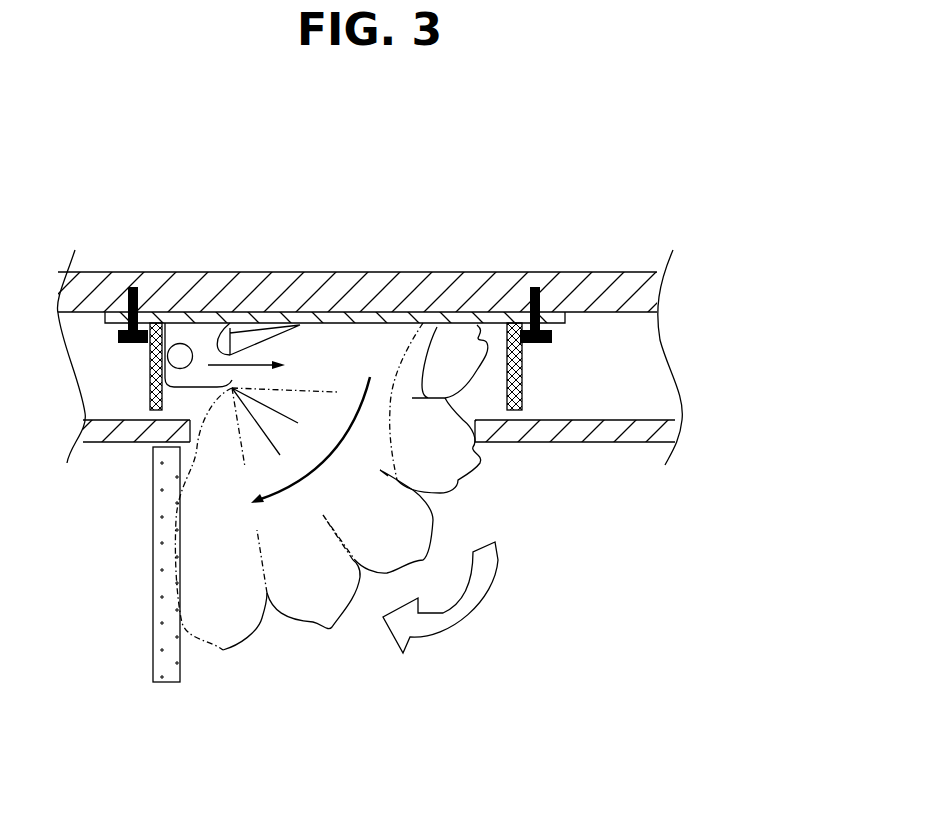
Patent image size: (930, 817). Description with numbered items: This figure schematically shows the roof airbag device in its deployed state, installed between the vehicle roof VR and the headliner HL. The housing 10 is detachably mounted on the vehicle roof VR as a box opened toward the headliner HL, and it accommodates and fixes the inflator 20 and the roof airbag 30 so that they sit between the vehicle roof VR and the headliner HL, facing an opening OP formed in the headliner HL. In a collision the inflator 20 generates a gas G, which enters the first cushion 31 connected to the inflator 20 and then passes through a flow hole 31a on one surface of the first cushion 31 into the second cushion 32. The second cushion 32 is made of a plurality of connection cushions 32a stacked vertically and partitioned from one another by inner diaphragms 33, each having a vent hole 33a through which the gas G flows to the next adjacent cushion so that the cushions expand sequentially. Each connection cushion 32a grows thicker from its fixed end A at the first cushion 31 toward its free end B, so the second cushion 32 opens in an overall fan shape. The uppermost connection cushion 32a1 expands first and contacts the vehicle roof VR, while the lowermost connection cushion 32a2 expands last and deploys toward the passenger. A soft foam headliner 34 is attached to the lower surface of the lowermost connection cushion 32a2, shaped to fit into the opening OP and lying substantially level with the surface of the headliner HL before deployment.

The housing 10 is at (552, 313).
The inflator 20 is at (178, 355).
The roof airbag 30 is at (161, 765).
The first cushion 31 is at (265, 312).
The flow hole 31a is at (207, 327).
The second cushion 32 is at (331, 650).
The connection cushion 32a is at (433, 517).
The uppermost connection cushion 32a1 is at (480, 375).
The lowermost connection cushion 32a2 is at (232, 655).
The inner diaphragm 33 is at (478, 323).
The vent hole 33a is at (351, 392).
The soft foam headliner 34 is at (153, 652).
The vehicle roof VR is at (103, 288).
The headliner HL is at (623, 442).
The opening OP is at (195, 477).
The gas G is at (260, 370).
The fixed end A is at (157, 448).
The free end B is at (482, 453).